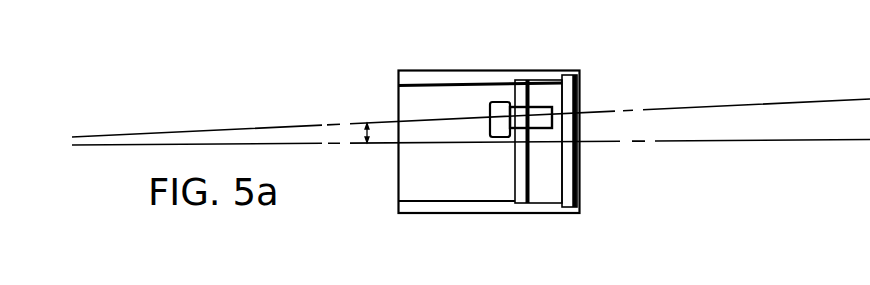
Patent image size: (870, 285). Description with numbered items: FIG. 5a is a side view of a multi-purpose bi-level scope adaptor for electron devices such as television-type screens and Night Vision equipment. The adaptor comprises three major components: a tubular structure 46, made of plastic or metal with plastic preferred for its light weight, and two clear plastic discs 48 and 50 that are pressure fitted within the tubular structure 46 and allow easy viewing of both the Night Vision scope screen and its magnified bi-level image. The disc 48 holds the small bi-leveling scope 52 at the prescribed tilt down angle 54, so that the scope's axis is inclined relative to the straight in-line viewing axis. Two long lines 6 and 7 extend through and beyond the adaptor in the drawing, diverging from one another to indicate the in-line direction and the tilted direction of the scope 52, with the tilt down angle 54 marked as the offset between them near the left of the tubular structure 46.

The first optical axis / beam line 6 is at (302, 125).
The second optical axis / beam line 7 is at (713, 143).
The tubular structure 46 is at (443, 70).
The disc 48 is at (529, 95).
The disc 50 is at (580, 87).
The bi-leveling scope 52 is at (495, 102).
The tilt down angle 54 is at (362, 135).